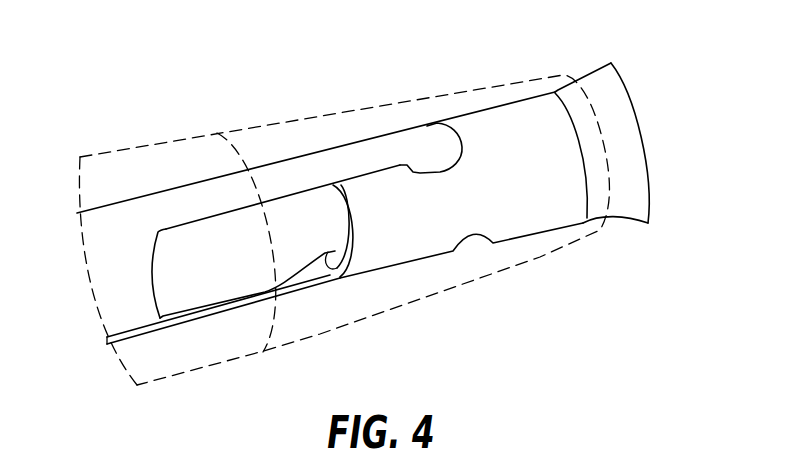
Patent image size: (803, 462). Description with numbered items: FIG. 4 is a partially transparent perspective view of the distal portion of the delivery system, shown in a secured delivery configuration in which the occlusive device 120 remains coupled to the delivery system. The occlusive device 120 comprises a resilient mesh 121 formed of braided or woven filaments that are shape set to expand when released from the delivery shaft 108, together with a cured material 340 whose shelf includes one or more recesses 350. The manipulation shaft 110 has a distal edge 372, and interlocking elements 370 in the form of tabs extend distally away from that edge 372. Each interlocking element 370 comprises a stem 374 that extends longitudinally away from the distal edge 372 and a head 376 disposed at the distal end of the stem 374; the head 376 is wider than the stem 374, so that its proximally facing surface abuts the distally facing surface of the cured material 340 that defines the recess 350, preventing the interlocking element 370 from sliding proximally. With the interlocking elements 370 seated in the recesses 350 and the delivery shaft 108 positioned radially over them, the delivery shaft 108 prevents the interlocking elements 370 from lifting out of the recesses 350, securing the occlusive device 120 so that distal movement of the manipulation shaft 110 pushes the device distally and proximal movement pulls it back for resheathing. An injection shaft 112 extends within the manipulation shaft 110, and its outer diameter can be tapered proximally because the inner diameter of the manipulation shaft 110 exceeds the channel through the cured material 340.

The occlusive device 120 is at (333, 44).
The delivery shaft 108 is at (118, 160).
The manipulation shaft 110 is at (107, 297).
The injection shaft 112 is at (182, 297).
The interlocking element 370 is at (308, 175).
The distal edge 372 is at (154, 255).
The stem 374 is at (227, 213).
The head 376 is at (420, 140).
The cured material 340 is at (513, 128).
The recess 350 is at (312, 266).
The mesh 121 is at (635, 222).